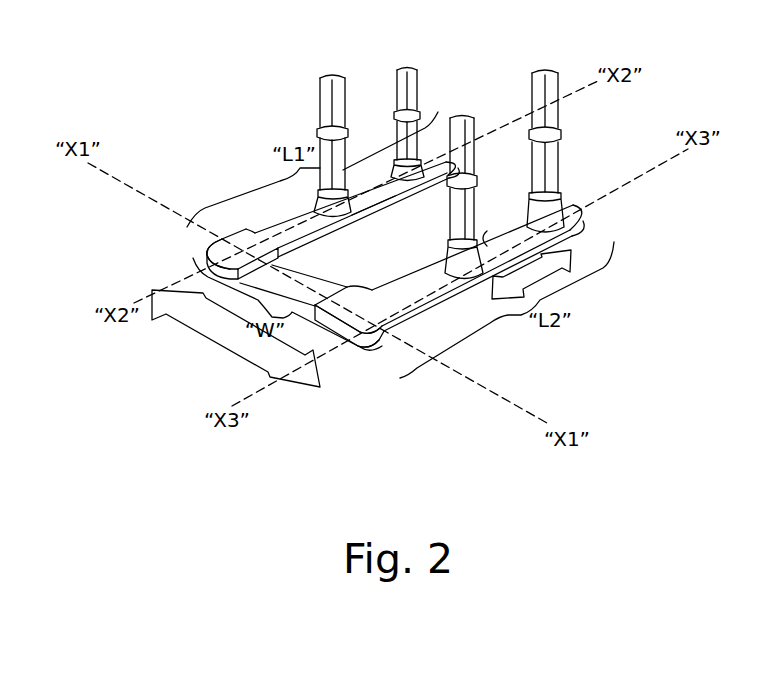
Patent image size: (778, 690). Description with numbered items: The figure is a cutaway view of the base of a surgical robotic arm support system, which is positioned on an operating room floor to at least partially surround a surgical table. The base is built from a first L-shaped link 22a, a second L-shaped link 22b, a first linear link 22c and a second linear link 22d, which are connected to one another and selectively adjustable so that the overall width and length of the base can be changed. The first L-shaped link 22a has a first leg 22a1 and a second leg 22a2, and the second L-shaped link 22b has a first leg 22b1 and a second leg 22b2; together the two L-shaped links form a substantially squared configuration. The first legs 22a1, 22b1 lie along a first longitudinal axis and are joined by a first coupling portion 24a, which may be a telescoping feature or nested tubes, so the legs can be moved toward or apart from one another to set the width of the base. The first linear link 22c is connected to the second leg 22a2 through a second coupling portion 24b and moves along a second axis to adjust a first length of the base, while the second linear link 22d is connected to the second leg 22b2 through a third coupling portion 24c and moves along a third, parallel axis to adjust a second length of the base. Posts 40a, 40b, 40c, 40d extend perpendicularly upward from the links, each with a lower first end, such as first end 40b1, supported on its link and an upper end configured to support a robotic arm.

The first L-shaped link 22a is at (166, 160).
The first leg of first L-shaped link 22a1 is at (237, 240).
The second leg of first L-shaped link 22a2 is at (293, 217).
The second L-shaped link 22b is at (466, 359).
The first leg of second L-shaped link 22b1 is at (371, 307).
The second leg of second L-shaped link 22b2 is at (423, 310).
The first linear link 22c is at (357, 139).
The second linear link 22d is at (541, 267).
The first coupling portion 24a is at (311, 275).
The second coupling portion 24b is at (365, 196).
The third coupling portion 24c is at (500, 238).
The post 40a is at (322, 97).
The post 40b is at (487, 165).
The first end of post 40b 40b1 is at (468, 230).
The post 40c is at (408, 85).
The post 40d is at (553, 87).